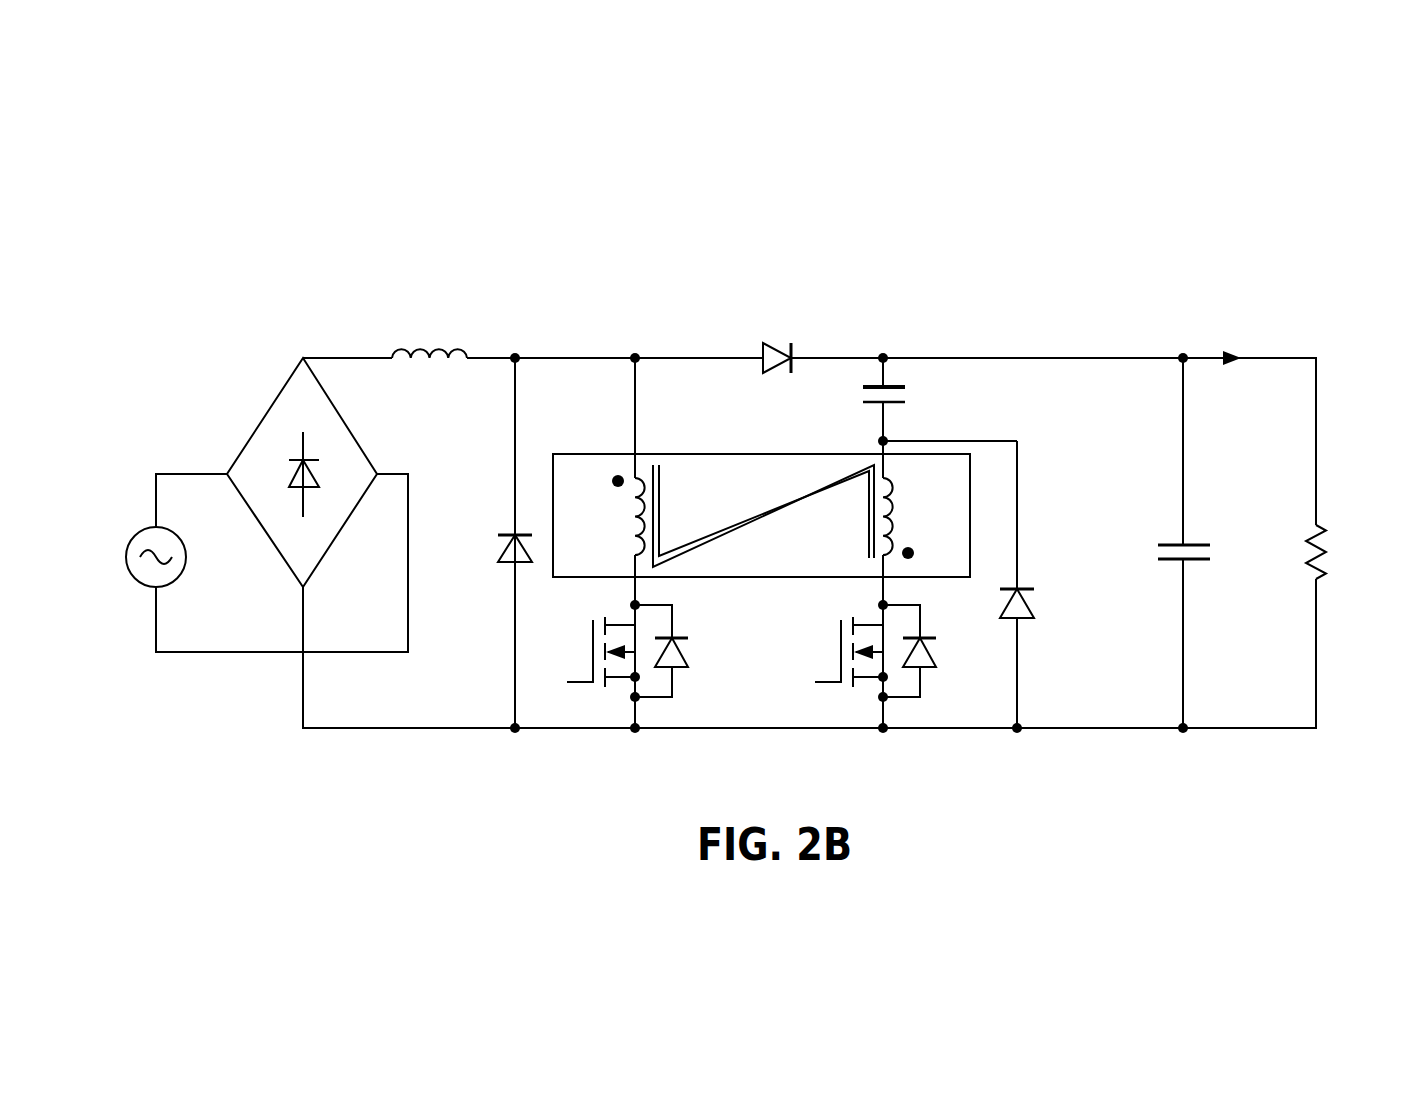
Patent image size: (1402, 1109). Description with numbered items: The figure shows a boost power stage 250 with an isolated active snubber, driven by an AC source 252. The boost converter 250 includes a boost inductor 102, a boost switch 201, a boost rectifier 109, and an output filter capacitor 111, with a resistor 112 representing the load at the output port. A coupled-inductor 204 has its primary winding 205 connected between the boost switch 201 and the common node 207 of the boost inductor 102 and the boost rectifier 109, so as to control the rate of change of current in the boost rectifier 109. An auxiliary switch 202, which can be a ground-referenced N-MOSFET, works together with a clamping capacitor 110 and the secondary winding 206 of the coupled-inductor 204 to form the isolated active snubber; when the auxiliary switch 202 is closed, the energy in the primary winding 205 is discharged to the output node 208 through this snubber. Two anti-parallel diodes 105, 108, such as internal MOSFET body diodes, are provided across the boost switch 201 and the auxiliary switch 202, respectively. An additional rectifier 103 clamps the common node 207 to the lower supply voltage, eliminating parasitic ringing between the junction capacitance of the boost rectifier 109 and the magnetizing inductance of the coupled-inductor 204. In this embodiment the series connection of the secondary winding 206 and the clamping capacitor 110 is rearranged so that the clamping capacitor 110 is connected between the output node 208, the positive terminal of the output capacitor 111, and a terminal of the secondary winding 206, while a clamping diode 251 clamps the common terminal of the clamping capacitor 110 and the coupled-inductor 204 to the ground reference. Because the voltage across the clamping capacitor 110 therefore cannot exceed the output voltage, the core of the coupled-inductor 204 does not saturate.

The boost inductor 102 is at (455, 347).
The additional rectifier 103 is at (503, 564).
The anti-parallel diode 105 is at (688, 654).
The anti-parallel diode 108 is at (931, 663).
The boost rectifier 109 is at (795, 343).
The clamping capacitor 110 is at (905, 388).
The output filter capacitor 111 is at (1196, 541).
The resistor 112 is at (1320, 523).
The boost switch 201 is at (644, 661).
The auxiliary switch 202 is at (869, 661).
The coupled-inductor 204 is at (761, 547).
The primary winding 205 is at (633, 515).
The secondary winding 206 is at (895, 508).
The common node 207 is at (635, 354).
The output node 208 is at (1183, 354).
The boost power stage 250 is at (986, 256).
The clamping diode 251 is at (1027, 587).
The AC source 252 is at (203, 407).